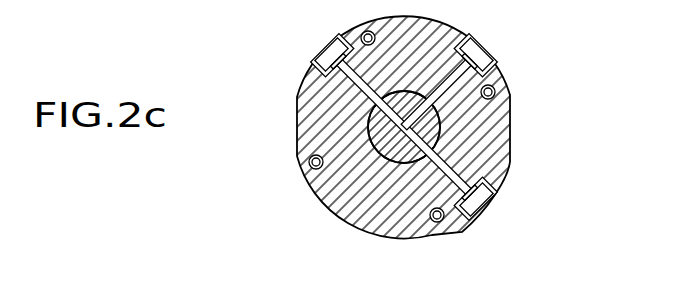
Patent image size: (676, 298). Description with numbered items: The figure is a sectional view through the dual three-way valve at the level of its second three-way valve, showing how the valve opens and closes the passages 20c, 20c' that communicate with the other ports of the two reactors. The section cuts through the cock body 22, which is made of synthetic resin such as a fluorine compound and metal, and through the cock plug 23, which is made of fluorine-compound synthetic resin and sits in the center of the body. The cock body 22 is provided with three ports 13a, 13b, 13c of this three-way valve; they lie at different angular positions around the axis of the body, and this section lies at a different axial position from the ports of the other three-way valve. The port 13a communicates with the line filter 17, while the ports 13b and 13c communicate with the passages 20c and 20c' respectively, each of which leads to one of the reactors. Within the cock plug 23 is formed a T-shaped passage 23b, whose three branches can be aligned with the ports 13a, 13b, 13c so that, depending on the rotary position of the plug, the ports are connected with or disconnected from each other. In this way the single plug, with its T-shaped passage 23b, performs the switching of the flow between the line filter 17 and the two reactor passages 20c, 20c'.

The port 13a is at (478, 60).
The port 13b is at (320, 62).
The port 13c is at (477, 196).
The line filter 17 is at (483, 44).
The passage 20c is at (306, 41).
The passage 20c' is at (506, 222).
The cock body 22 is at (320, 192).
The cock plug 23 is at (370, 133).
The T-shaped passage 23b is at (402, 165).